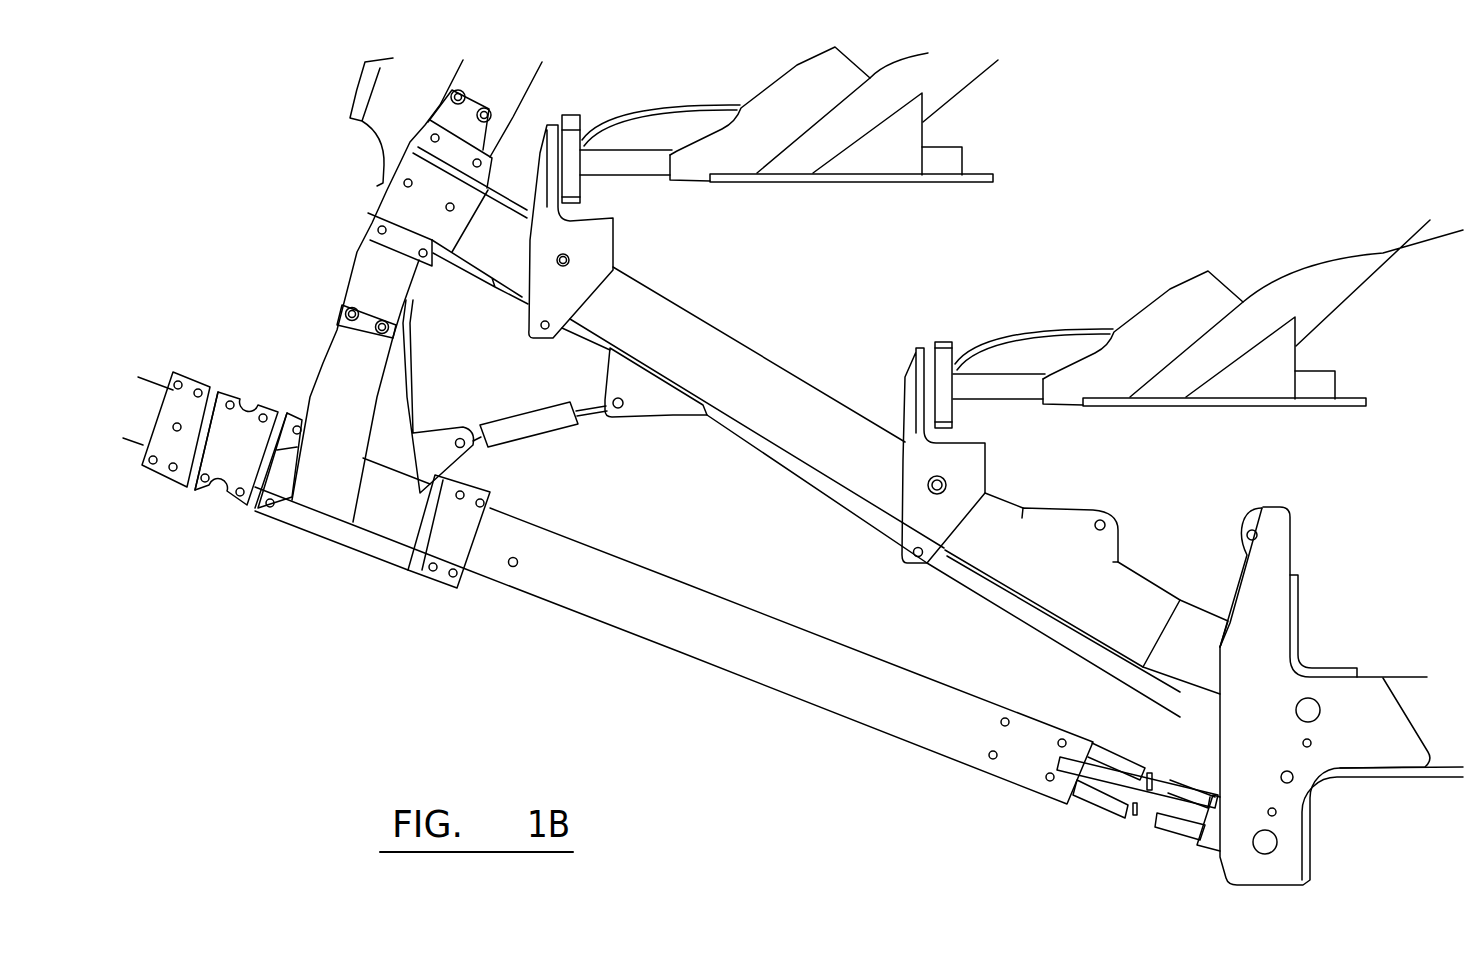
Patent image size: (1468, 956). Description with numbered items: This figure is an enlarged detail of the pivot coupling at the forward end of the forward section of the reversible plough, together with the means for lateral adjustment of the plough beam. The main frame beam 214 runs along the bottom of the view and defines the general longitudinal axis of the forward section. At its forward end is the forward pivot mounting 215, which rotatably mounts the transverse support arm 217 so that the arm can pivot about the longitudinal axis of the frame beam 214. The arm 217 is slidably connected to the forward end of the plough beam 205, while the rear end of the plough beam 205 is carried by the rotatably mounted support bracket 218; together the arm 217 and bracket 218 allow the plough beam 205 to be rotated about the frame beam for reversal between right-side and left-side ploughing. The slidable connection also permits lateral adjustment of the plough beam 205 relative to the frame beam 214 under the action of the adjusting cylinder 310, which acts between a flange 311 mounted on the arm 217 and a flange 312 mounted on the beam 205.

The plough beam 205 is at (750, 375).
The main frame beam 214 is at (828, 667).
The forward pivot mounting 215 is at (308, 545).
The transverse support arm 217 is at (345, 378).
The support bracket 218 is at (1270, 613).
The adjusting cylinder 310 is at (532, 423).
The flange 311 is at (433, 453).
The flange 312 is at (638, 395).